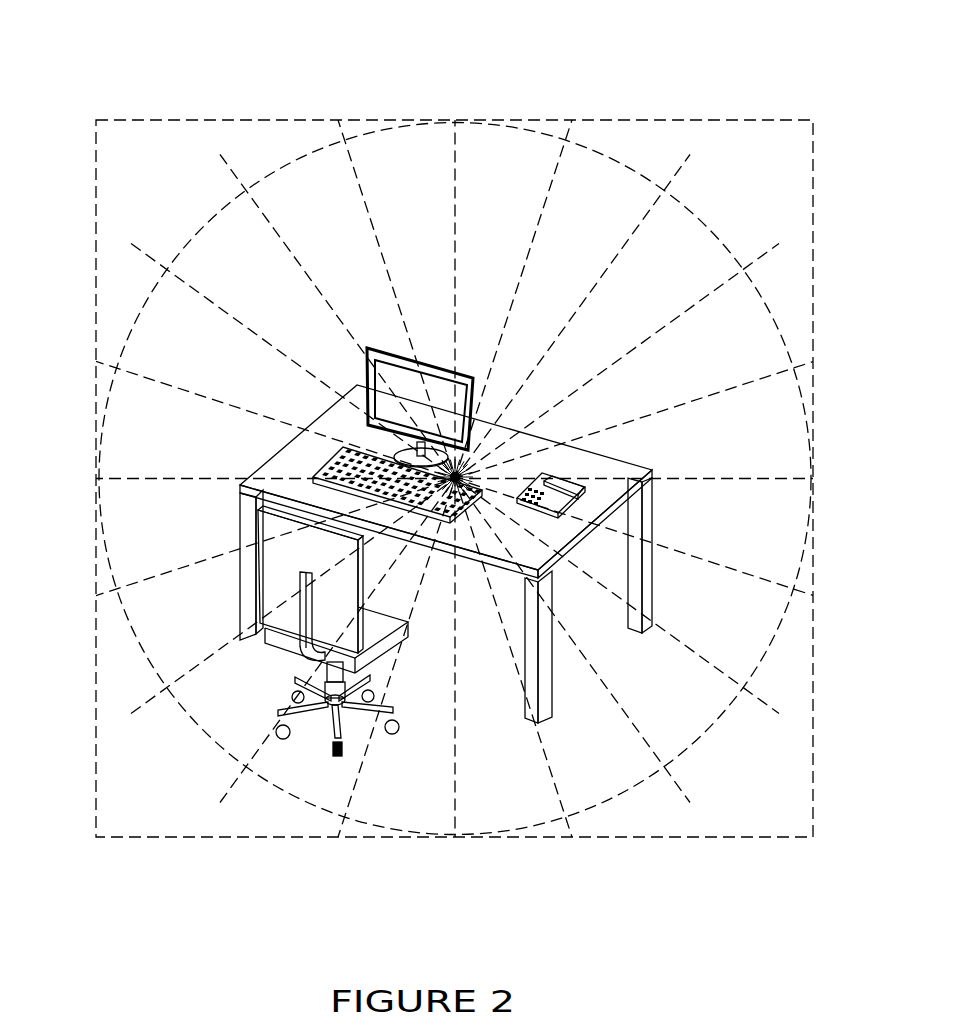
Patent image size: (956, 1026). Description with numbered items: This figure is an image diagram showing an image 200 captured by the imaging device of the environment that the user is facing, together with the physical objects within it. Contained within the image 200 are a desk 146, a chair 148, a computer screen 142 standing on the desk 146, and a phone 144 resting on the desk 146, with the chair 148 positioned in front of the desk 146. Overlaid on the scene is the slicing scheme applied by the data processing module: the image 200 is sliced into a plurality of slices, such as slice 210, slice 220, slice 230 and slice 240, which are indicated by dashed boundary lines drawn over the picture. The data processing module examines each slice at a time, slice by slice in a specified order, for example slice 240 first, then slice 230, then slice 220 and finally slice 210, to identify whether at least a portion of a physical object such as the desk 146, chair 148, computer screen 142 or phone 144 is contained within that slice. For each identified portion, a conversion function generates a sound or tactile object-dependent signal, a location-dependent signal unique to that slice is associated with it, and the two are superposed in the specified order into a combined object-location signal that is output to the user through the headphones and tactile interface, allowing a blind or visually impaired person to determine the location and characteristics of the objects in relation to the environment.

The image 200 is at (736, 54).
The slice 210 is at (287, 782).
The slice 220 is at (222, 723).
The slice 230 is at (162, 655).
The slice 240 is at (120, 533).
The computer screen 142 is at (392, 352).
The phone 144 is at (583, 498).
The desk 146 is at (625, 465).
The chair 148 is at (272, 597).